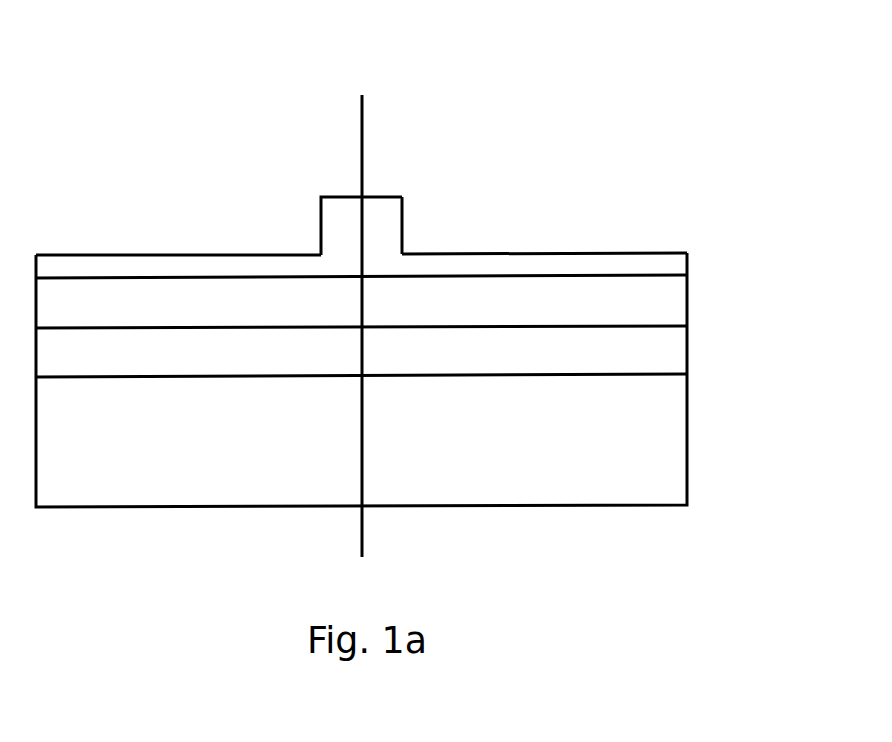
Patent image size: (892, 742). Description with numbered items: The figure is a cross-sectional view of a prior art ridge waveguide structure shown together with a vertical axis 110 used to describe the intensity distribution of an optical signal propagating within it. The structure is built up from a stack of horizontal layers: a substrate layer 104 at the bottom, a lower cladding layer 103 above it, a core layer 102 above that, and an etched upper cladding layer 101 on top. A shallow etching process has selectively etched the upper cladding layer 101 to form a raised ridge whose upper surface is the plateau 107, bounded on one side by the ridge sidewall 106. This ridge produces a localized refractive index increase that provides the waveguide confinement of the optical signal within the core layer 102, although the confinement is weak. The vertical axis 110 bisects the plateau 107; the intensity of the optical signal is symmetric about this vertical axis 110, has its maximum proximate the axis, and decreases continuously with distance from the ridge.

The upper cladding layer 101 is at (158, 277).
The core layer 102 is at (463, 300).
The lower cladding layer 103 is at (475, 367).
The substrate layer 104 is at (160, 494).
The gate sidewall 106 is at (403, 227).
The plateau 107 is at (378, 196).
The vertical axis 110 is at (363, 310).